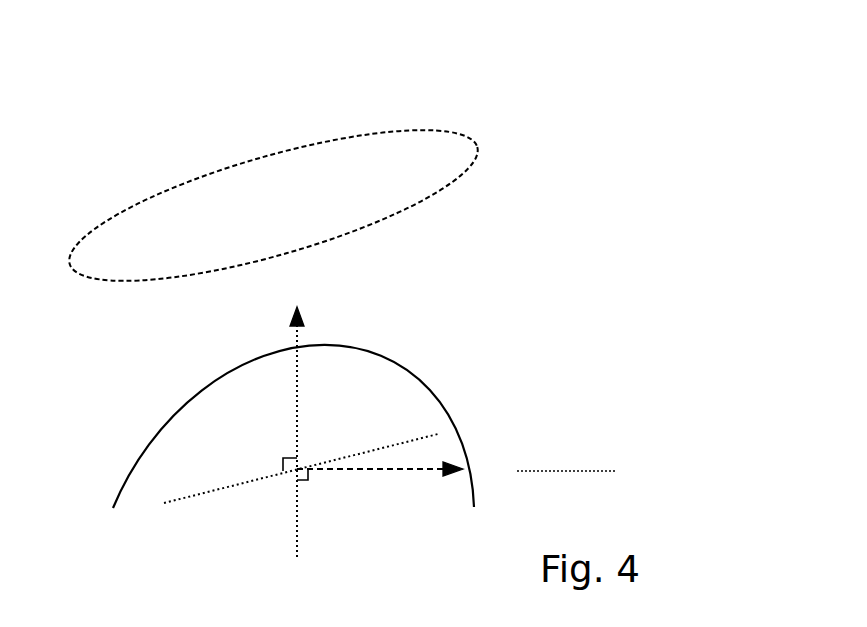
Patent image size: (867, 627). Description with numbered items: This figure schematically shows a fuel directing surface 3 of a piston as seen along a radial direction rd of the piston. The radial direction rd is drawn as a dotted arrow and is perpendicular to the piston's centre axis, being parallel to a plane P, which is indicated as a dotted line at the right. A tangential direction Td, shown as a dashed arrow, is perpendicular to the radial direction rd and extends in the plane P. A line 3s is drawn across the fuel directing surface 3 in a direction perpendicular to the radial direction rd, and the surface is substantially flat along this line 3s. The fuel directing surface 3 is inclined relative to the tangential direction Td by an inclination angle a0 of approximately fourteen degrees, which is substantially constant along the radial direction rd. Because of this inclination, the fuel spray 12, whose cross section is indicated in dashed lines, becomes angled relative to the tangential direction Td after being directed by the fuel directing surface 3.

The fuel spray 12 is at (452, 179).
The fuel directing surface 3 is at (210, 415).
The line 3s is at (408, 438).
The radial direction rd is at (297, 411).
The inclination angle a0 is at (327, 467).
The tangential direction Td is at (380, 472).
The plane P is at (570, 470).